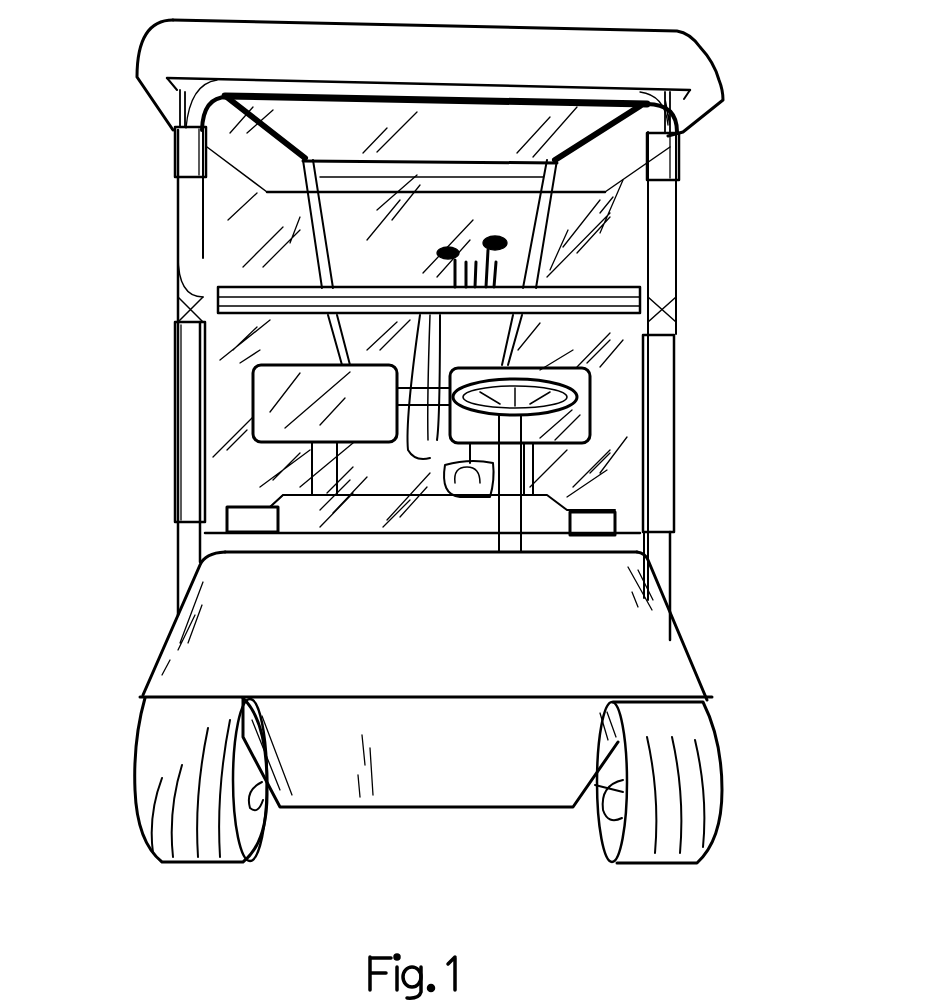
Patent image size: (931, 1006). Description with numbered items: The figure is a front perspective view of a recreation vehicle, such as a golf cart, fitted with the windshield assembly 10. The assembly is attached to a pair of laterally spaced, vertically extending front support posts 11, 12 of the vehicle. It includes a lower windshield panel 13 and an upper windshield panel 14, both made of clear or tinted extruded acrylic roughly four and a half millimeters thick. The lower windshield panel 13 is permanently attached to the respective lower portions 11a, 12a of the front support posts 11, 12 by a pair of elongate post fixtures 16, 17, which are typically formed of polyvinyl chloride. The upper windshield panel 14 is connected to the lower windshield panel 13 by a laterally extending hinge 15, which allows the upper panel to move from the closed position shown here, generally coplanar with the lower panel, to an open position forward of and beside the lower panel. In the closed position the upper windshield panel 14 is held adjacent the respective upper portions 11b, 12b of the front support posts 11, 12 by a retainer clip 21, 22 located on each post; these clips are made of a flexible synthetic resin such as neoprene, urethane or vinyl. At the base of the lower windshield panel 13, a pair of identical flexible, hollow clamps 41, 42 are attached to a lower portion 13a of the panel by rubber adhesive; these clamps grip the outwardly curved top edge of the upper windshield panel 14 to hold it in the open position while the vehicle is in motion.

The windshield assembly 10 is at (150, 257).
The front support post 11 is at (178, 300).
The lower portion of front support post 11a is at (175, 338).
The upper portion of front support post 11b is at (176, 190).
The front support post 12 is at (676, 307).
The lower portion of front support post 12a is at (662, 413).
The upper portion of front support post 12b is at (630, 230).
The lower windshield panel 13 is at (220, 465).
The lower portion of lower windshield panel 13a is at (243, 475).
The upper windshield panel 14 is at (217, 235).
The hinge 15 is at (205, 311).
The post fixture 16 is at (185, 393).
The post fixture 17 is at (622, 362).
The retainer clip 21 is at (177, 130).
The retainer clip 22 is at (672, 160).
The clamp 41 is at (222, 532).
The clamp 42 is at (602, 548).